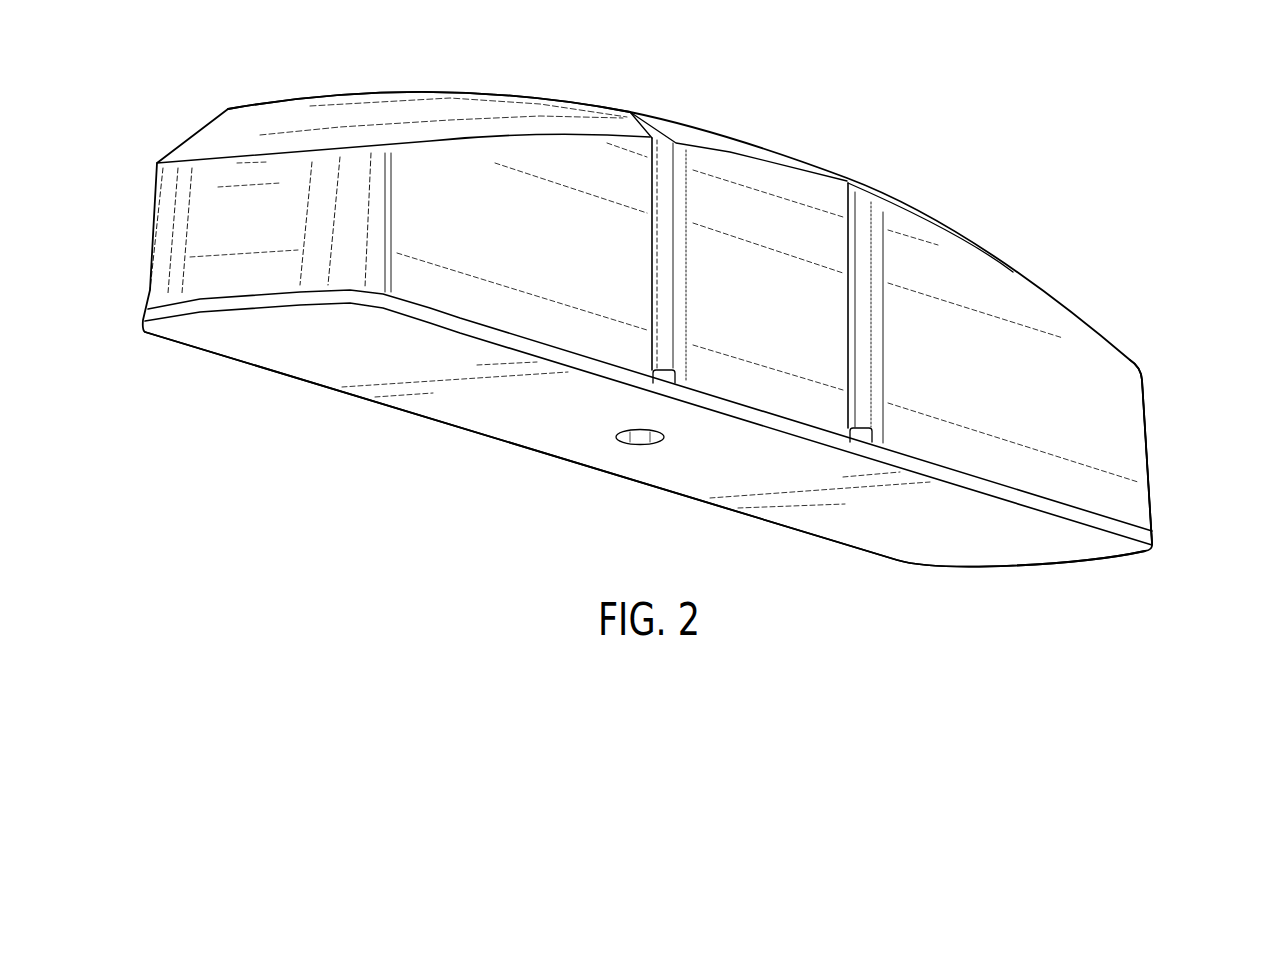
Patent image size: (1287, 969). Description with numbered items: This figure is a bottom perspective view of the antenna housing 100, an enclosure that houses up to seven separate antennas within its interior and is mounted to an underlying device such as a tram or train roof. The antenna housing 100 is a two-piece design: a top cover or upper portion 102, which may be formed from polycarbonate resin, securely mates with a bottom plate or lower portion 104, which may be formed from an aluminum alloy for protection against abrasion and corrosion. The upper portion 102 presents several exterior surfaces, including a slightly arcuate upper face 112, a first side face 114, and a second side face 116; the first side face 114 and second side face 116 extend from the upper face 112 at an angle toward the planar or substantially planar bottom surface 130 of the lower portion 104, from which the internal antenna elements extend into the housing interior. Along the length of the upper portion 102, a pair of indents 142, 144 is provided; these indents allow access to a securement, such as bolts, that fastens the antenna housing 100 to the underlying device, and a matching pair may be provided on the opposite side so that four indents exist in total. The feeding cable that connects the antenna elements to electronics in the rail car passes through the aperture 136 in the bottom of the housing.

The antenna housing 100 is at (1025, 130).
The upper portion 102 is at (1213, 372).
The lower portion 104 is at (1163, 528).
The upper face 112 is at (357, 93).
The first side face 114 is at (227, 225).
The second side face 116 is at (1147, 435).
The planar bottom surface 130 is at (302, 380).
The aperture 136 is at (640, 445).
The indent 142 is at (663, 320).
The indent 144 is at (862, 387).